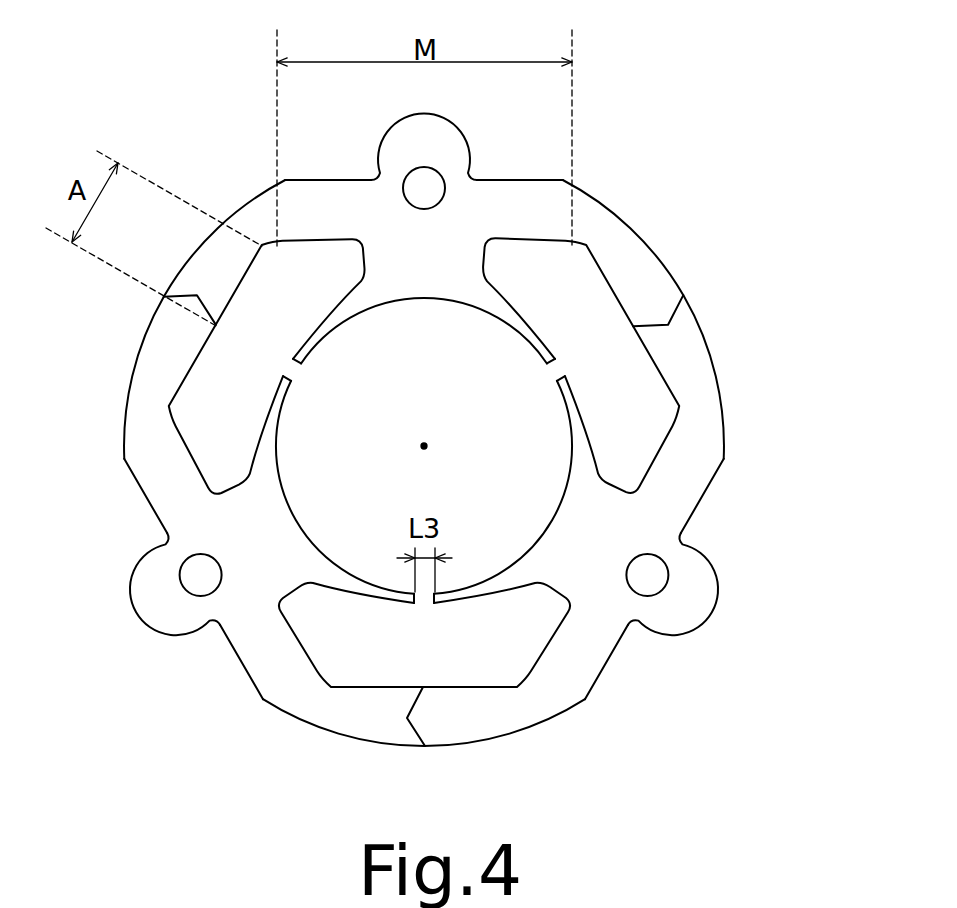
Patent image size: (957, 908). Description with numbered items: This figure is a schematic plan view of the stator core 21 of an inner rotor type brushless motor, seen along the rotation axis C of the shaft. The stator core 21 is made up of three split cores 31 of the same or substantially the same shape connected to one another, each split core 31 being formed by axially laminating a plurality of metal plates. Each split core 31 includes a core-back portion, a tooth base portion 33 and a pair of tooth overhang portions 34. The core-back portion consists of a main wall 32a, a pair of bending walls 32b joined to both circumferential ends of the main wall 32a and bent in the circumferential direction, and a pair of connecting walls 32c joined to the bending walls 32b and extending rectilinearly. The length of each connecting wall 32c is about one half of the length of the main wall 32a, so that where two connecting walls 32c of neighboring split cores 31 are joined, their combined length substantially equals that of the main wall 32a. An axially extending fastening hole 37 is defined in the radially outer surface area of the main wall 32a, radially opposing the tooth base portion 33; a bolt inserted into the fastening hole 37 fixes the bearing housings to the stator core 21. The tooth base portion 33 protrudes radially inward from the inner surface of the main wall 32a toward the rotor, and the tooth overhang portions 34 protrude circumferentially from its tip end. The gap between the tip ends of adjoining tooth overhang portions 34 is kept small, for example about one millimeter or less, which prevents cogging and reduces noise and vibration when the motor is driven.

The stator core 21 is at (437, 384).
The split core 31 is at (422, 387).
The main wall 32a is at (511, 198).
The bending wall 32b is at (263, 200).
The connecting wall 32c is at (213, 265).
The tooth base portion 33 is at (460, 262).
The tooth overhang portion 34 is at (335, 330).
The fastening hole 37 is at (425, 187).
The rotation axis C is at (430, 445).